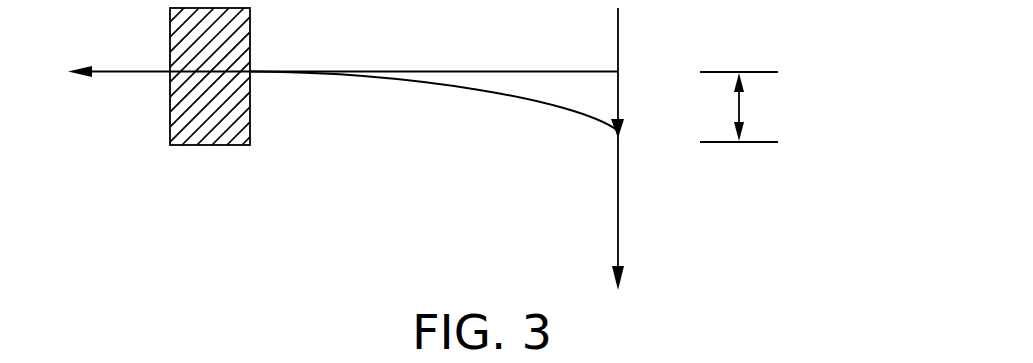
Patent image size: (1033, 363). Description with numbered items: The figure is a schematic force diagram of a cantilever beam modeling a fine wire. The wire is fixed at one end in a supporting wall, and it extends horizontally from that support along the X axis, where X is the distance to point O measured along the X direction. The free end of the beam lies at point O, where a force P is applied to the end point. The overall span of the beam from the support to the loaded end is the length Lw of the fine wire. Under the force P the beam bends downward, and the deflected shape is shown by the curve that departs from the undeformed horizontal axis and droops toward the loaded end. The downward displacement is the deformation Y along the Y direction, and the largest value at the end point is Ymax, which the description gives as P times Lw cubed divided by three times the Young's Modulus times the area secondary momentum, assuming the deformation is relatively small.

The fixed support wall is at (276, 83).
The X direction distance X is at (343, 54).
The length of the fine wire Lw is at (427, 44).
The force P is at (634, 135).
The deformation along the Y direction Y is at (643, 289).
The deflected wire curve is at (437, 105).
The maximum deformation of the end point Ymax is at (776, 107).